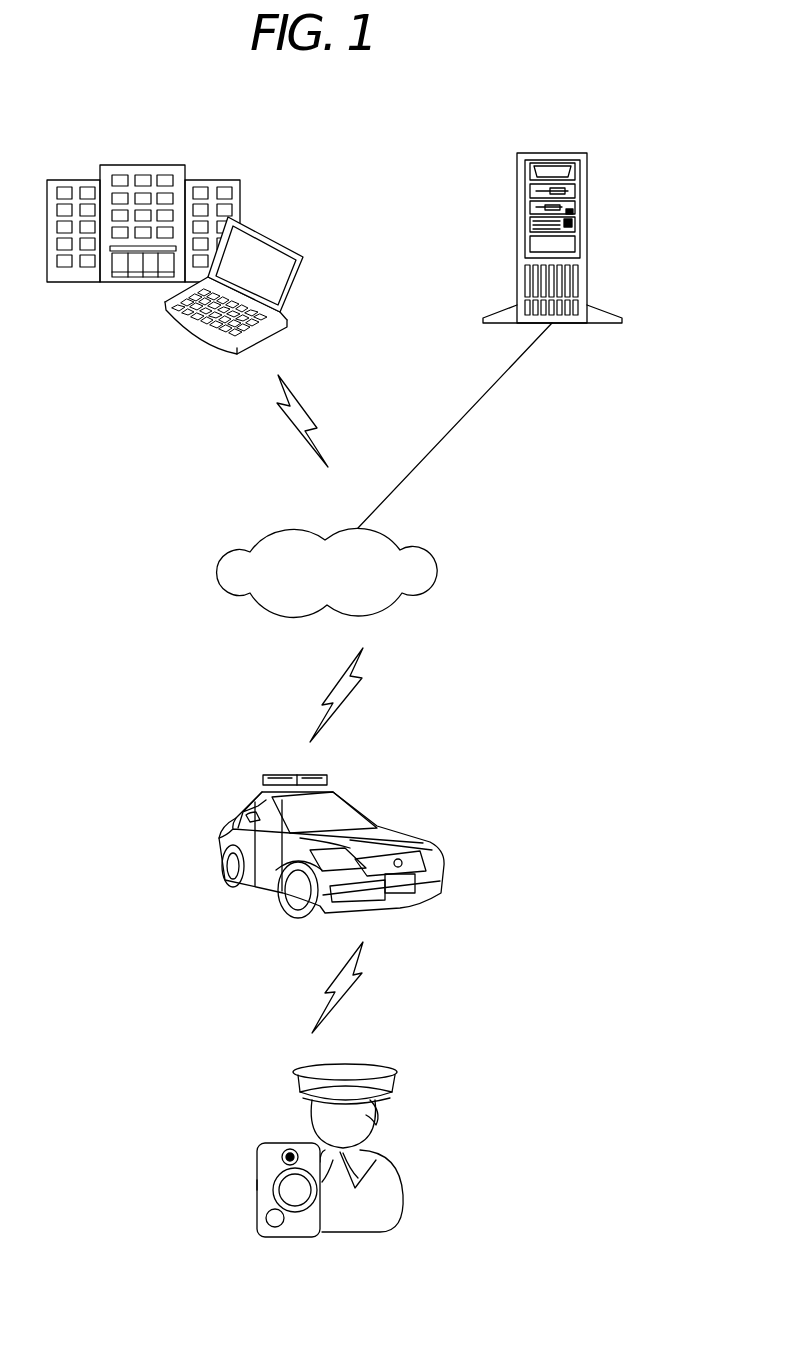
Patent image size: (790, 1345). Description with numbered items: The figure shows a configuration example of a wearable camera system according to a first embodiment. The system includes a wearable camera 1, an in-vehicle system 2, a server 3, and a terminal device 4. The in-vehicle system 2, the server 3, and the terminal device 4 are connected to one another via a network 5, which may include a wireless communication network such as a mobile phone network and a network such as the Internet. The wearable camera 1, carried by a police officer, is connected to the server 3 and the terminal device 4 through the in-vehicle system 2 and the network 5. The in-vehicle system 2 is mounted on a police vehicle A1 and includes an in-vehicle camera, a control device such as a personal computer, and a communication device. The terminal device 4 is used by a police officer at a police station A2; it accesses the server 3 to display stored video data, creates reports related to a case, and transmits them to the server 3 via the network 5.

The wearable camera 1 is at (270, 1143).
The in-vehicle system 2 is at (337, 832).
The server 3 is at (540, 153).
The terminal device 4 is at (263, 236).
The network 5 is at (392, 540).
The police vehicle A1 is at (235, 812).
The police station A2 is at (120, 166).